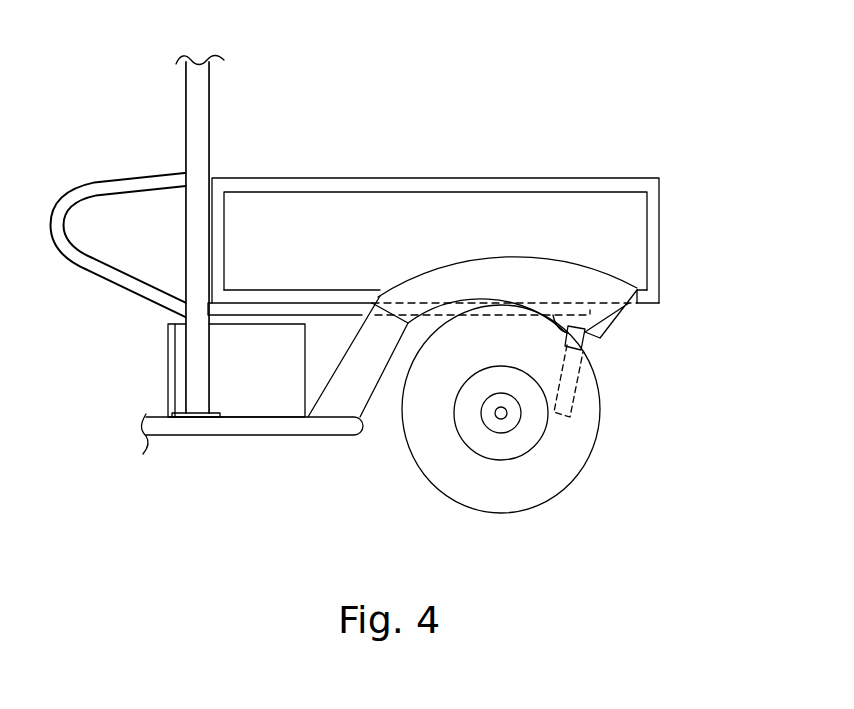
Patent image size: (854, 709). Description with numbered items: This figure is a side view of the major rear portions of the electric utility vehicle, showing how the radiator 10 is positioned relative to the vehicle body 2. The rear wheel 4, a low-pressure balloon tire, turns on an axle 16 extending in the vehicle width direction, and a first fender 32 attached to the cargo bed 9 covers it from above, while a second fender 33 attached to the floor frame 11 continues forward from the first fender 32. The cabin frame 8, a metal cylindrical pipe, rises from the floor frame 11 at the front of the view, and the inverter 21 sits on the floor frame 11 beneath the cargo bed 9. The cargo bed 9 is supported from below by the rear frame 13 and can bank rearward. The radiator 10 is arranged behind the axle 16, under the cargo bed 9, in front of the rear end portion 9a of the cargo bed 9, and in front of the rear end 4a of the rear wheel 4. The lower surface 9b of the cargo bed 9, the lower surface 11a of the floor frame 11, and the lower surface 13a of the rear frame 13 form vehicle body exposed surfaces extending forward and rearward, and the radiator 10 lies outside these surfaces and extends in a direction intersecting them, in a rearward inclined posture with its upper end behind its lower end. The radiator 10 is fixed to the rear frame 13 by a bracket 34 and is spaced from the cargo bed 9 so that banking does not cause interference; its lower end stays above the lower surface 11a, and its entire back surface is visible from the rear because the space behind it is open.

The vehicle body 2 is at (158, 417).
The rear wheel 4 is at (433, 487).
The rear end of rear wheel 4a is at (600, 413).
The cabin frame 8 is at (187, 90).
The cargo bed 9 is at (632, 178).
The rear end portion of cargo bed 9a is at (660, 247).
The lower surface of cargo bed 9b is at (408, 300).
The radiator 10 is at (598, 382).
The floor frame 11 is at (161, 437).
The lower surface of floor frame 11a is at (195, 436).
The rear frame 13 is at (303, 308).
The lower surface of rear frame 13a is at (348, 315).
The axle 16 is at (501, 419).
The inverter 21 is at (247, 398).
The first fender 32 is at (485, 268).
The second fender 33 is at (330, 405).
The bracket 34 is at (534, 314).